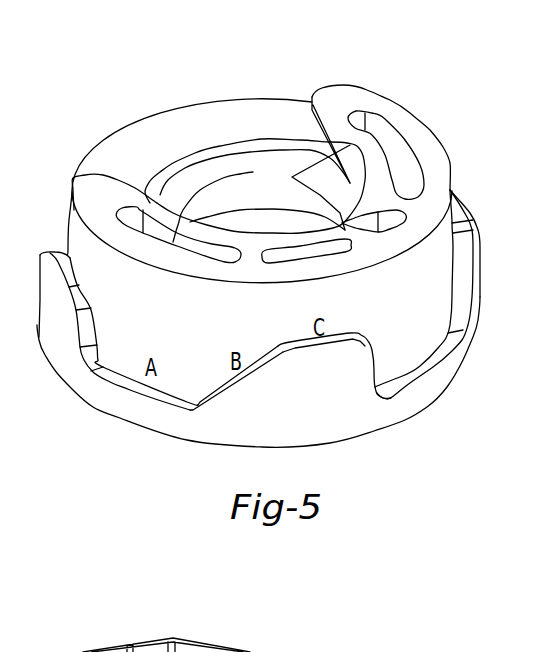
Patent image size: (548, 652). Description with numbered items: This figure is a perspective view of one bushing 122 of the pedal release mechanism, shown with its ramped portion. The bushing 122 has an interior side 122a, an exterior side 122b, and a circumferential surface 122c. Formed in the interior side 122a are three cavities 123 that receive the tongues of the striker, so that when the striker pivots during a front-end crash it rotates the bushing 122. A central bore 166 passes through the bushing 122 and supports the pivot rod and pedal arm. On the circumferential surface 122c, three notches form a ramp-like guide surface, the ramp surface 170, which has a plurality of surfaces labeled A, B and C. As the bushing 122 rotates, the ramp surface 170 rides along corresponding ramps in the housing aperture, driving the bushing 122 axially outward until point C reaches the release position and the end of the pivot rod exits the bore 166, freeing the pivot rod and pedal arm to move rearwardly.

The bushing 122 is at (195, 95).
The interior side 122a is at (160, 210).
The exterior side 122b is at (194, 445).
The circumferential surface 122c is at (193, 314).
The cavities 123 is at (246, 173).
The central bore 166 is at (232, 160).
The ramp surface 170 is at (273, 362).